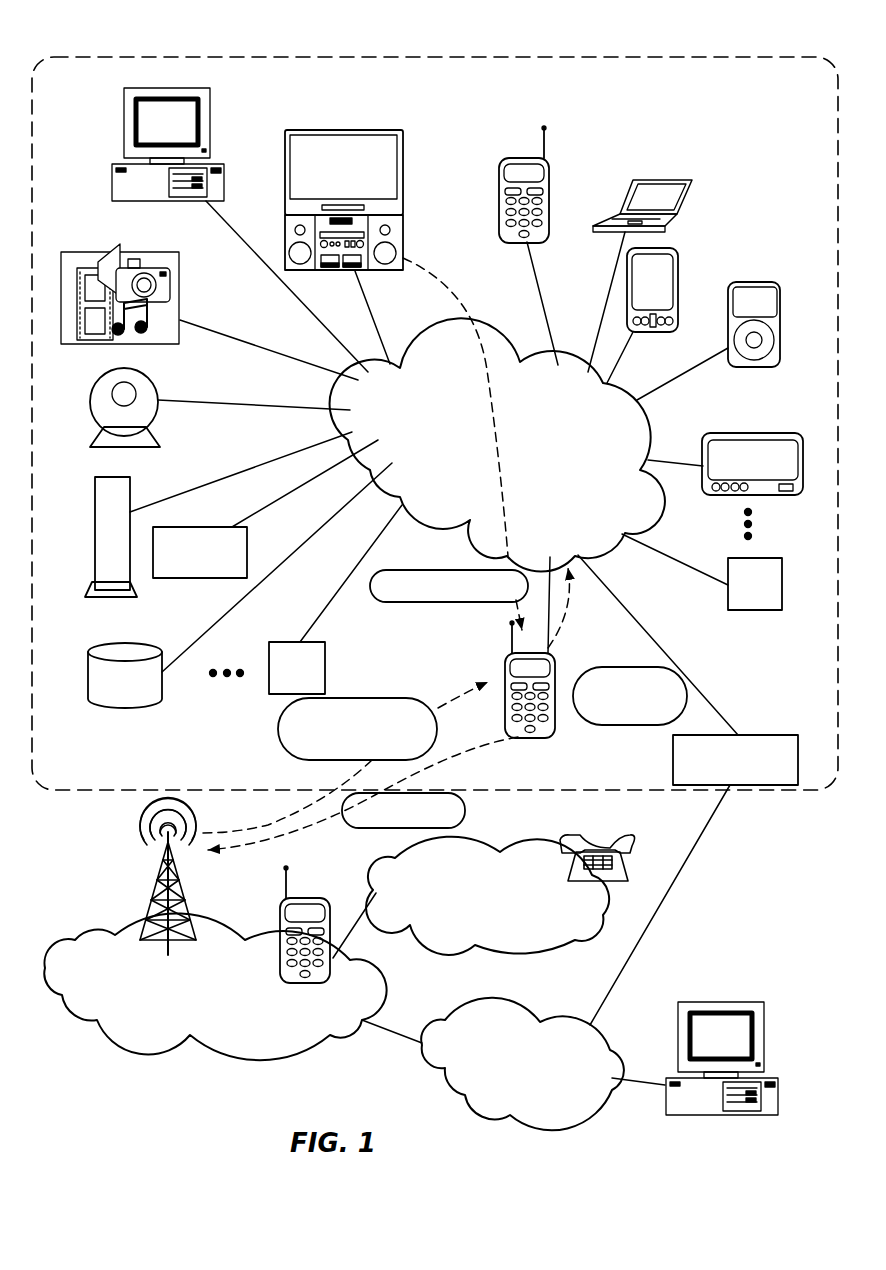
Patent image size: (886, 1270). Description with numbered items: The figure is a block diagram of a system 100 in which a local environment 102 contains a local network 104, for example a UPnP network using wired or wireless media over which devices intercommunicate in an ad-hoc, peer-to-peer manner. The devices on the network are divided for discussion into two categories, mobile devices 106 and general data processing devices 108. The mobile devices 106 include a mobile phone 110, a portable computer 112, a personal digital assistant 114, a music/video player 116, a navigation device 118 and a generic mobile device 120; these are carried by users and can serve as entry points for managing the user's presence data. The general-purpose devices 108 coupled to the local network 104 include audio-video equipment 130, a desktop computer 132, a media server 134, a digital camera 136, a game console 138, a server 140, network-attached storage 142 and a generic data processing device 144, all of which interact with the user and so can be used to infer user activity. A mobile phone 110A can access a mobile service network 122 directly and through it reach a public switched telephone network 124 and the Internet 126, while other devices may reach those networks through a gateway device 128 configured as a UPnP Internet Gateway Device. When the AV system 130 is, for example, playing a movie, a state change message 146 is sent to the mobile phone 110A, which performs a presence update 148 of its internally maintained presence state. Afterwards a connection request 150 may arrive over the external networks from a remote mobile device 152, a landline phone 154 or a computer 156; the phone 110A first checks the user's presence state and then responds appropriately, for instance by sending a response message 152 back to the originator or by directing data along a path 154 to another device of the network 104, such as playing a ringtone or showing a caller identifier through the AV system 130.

The system 100 is at (93, 21).
The local environment 102 is at (452, 57).
The local network 104 is at (425, 325).
The mobile devices 106 is at (727, 150).
The general data processing devices 108 is at (99, 93).
The mobile phone 110 is at (514, 158).
The mobile phone 110A is at (538, 737).
The portable computer 112 is at (655, 178).
The personal digital assistant 114 is at (668, 248).
The music/video player 116 is at (752, 282).
The navigation device 118 is at (768, 433).
The generic mobile device 120 is at (768, 558).
The mobile service network 122 is at (378, 985).
The public switched telephone network 124 is at (497, 845).
The Internet 126 is at (520, 995).
The gateway device 128 is at (775, 735).
The audio-video equipment 130 is at (405, 245).
The desktop computer 132 is at (203, 88).
The media server 134 is at (160, 252).
The digital camera 136 is at (158, 378).
The game console 138 is at (130, 480).
The server 140 is at (213, 580).
The network-attached storage 142 is at (130, 710).
The generic data processing device 144 is at (312, 642).
The state change message 146 is at (477, 603).
The presence update 148 is at (650, 667).
The connection request 150 is at (388, 698).
The mobile device / response message 152 is at (446, 793).
The landline phone / path 154 is at (572, 612).
The computer 156 is at (755, 1003).